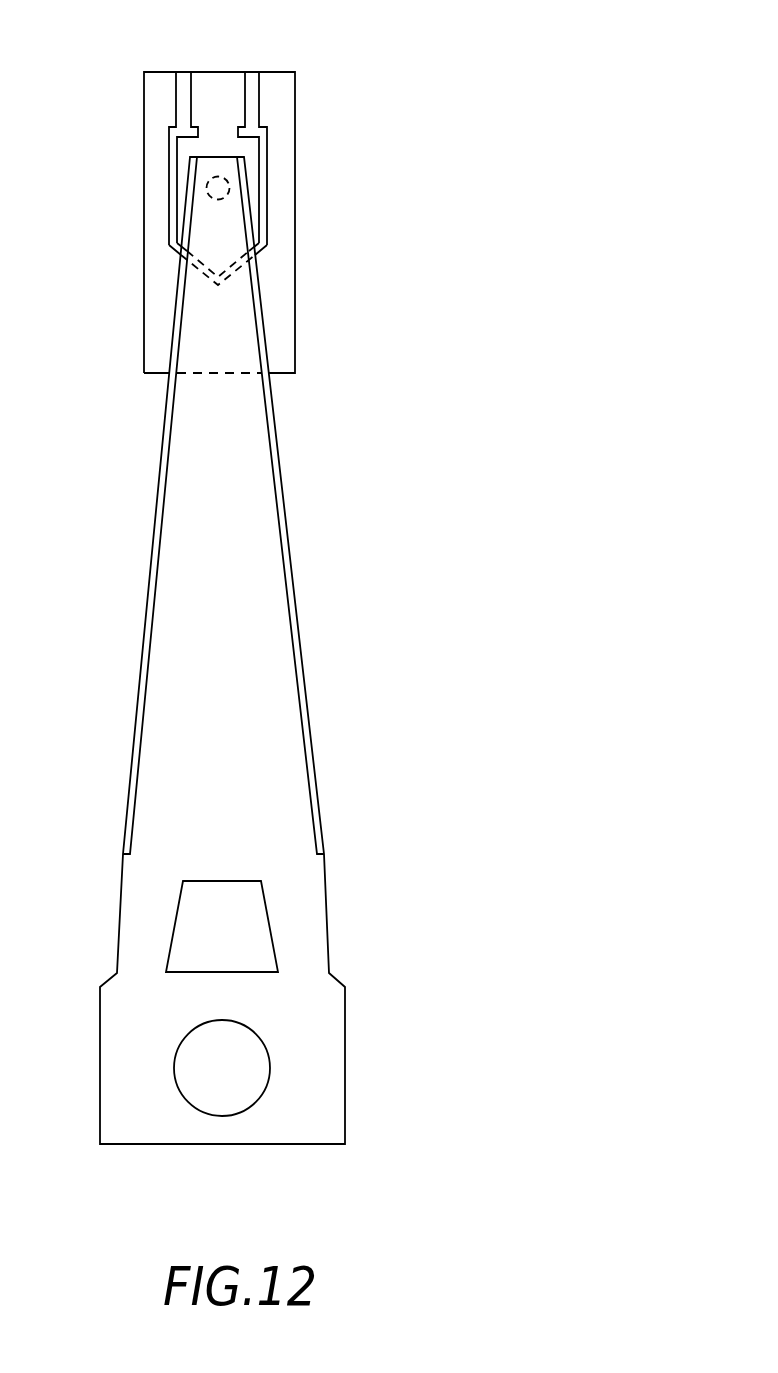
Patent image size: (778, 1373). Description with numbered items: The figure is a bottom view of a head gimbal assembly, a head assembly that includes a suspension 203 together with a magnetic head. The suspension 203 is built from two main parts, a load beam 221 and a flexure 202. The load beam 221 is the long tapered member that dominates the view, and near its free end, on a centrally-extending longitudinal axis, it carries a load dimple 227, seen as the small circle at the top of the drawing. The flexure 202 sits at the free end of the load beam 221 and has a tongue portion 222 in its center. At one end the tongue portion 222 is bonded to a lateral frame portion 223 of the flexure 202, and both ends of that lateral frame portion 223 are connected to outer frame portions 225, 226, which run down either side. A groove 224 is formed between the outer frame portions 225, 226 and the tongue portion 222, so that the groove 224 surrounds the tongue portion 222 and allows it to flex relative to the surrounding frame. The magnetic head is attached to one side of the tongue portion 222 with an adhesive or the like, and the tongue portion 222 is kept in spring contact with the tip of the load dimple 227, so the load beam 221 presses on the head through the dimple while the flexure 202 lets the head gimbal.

The flexure 202 is at (308, 348).
The suspension 203 is at (276, 645).
The load beam 221 is at (248, 588).
The tongue portion 222 is at (245, 152).
The lateral frame portion 223 is at (225, 98).
The groove 224 is at (171, 147).
The outer frame portion 225 is at (282, 212).
The outer frame portion 226 is at (159, 233).
The load dimple 227 is at (207, 193).